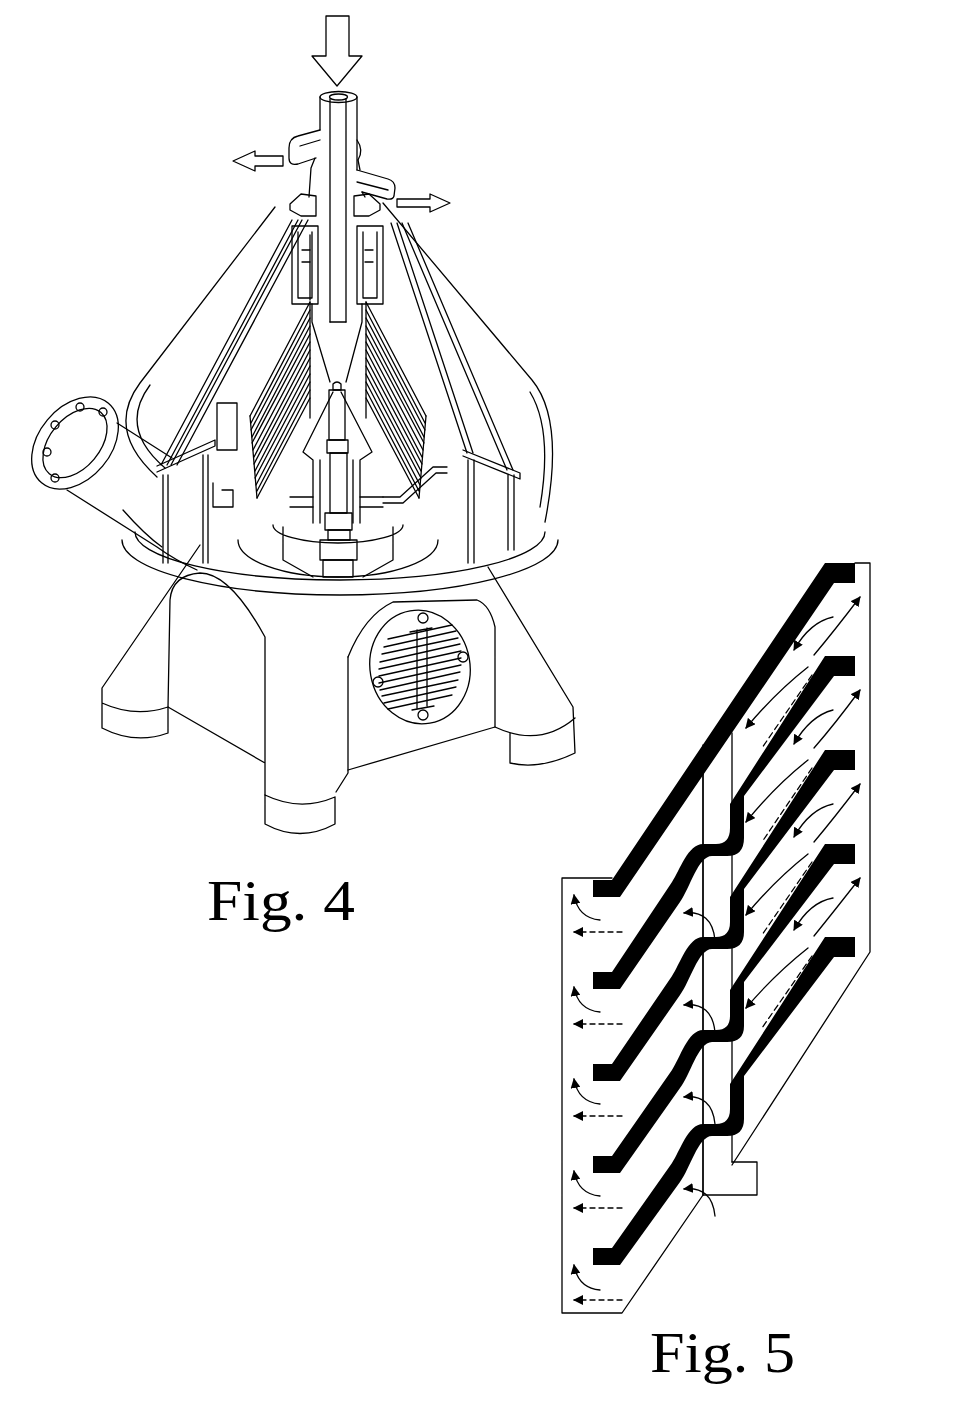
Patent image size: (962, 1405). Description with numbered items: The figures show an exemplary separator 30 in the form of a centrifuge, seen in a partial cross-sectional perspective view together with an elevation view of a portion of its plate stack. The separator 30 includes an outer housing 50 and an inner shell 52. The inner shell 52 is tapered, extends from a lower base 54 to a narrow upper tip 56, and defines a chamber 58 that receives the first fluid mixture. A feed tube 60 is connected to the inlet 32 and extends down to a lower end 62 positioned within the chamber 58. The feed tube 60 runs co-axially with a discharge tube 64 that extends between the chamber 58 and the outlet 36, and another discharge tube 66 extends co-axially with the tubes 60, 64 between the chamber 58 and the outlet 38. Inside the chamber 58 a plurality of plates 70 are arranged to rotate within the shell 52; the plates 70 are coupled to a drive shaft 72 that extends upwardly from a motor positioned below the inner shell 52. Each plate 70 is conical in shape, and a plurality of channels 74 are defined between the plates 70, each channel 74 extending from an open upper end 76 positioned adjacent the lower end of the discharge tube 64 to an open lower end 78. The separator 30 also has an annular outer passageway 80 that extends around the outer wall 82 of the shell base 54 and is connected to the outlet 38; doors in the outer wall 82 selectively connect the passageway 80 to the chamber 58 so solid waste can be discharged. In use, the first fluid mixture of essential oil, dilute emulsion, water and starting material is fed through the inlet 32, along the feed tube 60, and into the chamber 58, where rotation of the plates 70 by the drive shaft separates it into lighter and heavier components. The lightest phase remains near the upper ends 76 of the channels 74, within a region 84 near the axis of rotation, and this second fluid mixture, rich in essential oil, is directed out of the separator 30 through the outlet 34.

In FIG. 4, the separator 30 is at (586, 187).
In FIG. 4, the inlet 32 is at (360, 110).
In FIG. 4, the outlet 34 is at (300, 133).
In FIG. 4, the outlet 36 is at (393, 188).
In FIG. 4, the outlet 38 is at (62, 460).
In FIG. 4, the outer housing 50 is at (507, 374).
In FIG. 4, the inner shell 52 is at (410, 312).
In FIG. 4, the lower base 54 is at (480, 380).
In FIG. 4, the narrow upper tip 56 is at (372, 237).
In FIG. 4, the chamber 58 is at (442, 440).
In FIG. 4, the feed tube 60 is at (348, 152).
In FIG. 4, the lower end 62 is at (322, 330).
In FIG. 4, the discharge tube 64 is at (366, 172).
In FIG. 4, the discharge tube 66 is at (310, 235).
In FIG. 4, the plates 70 is at (270, 483).
In FIG. 5, the plates 70 is at (856, 574).
In FIG. 4, the drive shaft 72 is at (482, 560).
In FIG. 4, the channels 74 is at (258, 548).
In FIG. 5, the channels 74 is at (536, 966).
In FIG. 5, the open upper end 76 is at (862, 640).
In FIG. 5, the open lower end 78 is at (580, 948).
In FIG. 4, the annular outer passageway 80 is at (503, 497).
In FIG. 4, the outer wall 82 is at (190, 527).
In FIG. 5, the region 84 is at (788, 672).